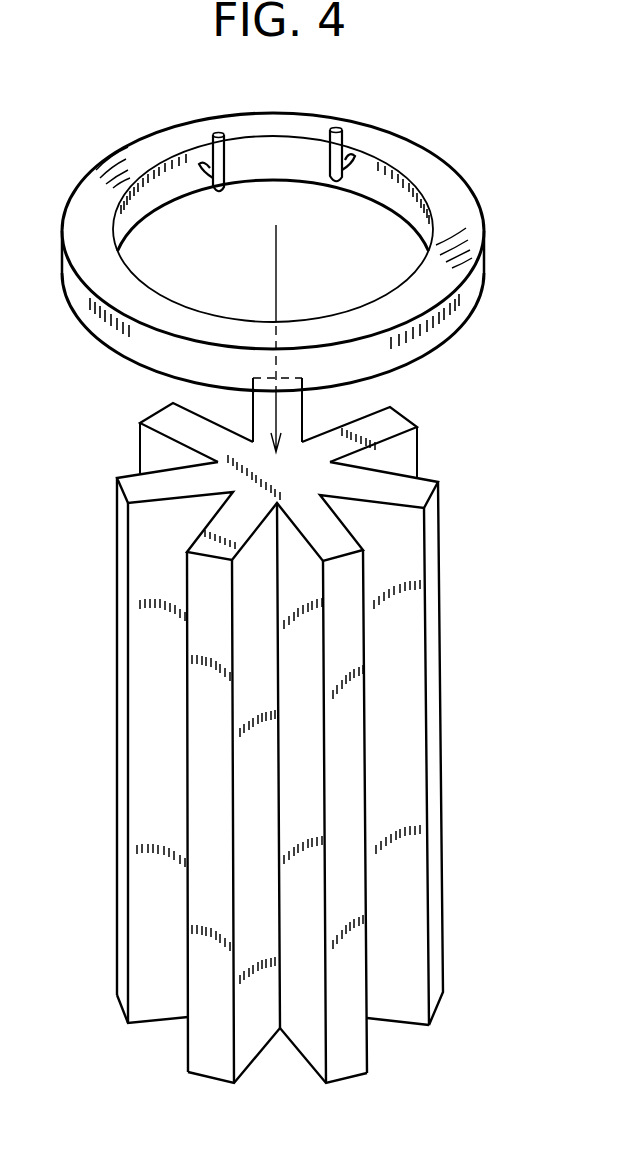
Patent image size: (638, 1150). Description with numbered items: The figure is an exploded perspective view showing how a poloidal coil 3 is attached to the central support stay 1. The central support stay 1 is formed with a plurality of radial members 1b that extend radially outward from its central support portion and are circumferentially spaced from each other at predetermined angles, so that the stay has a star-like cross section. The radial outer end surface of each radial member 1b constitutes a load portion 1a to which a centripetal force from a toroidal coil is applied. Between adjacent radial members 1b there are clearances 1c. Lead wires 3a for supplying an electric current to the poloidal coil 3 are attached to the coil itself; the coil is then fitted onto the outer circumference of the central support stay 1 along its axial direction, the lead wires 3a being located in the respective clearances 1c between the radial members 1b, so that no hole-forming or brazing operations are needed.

The central support stay 1 is at (312, 654).
The load portion 1a is at (432, 610).
The radial member 1b is at (377, 481).
The clearance 1c is at (328, 404).
The poloidal coil 3 is at (462, 210).
The lead wire 3a is at (336, 162).